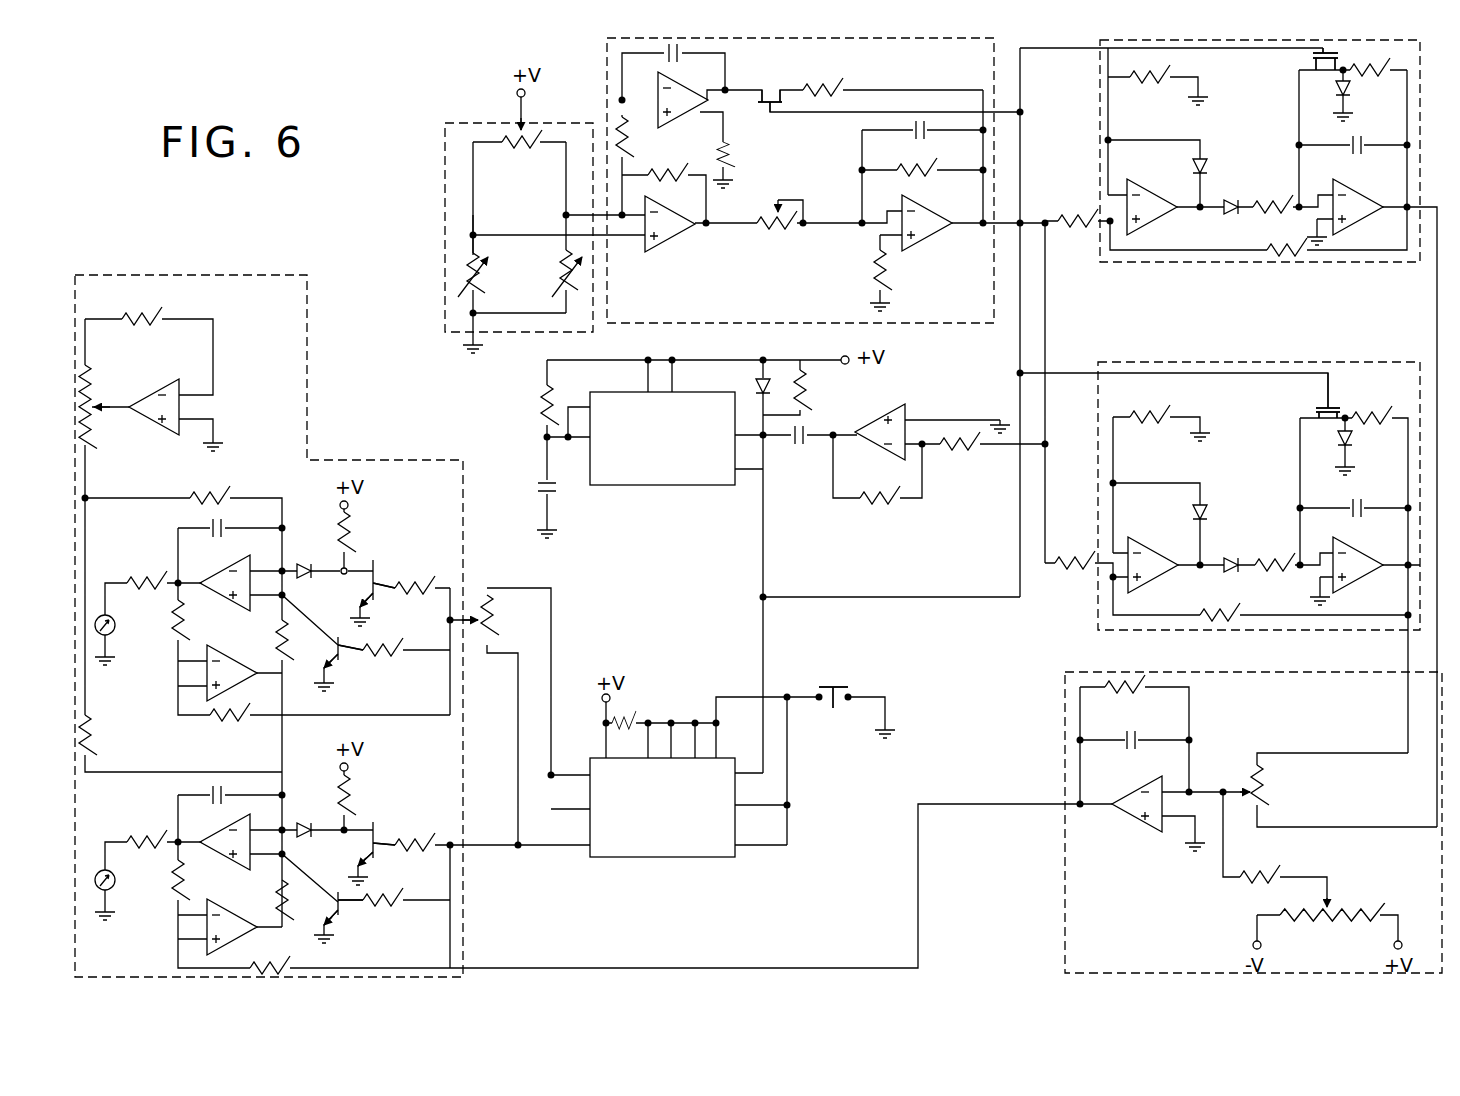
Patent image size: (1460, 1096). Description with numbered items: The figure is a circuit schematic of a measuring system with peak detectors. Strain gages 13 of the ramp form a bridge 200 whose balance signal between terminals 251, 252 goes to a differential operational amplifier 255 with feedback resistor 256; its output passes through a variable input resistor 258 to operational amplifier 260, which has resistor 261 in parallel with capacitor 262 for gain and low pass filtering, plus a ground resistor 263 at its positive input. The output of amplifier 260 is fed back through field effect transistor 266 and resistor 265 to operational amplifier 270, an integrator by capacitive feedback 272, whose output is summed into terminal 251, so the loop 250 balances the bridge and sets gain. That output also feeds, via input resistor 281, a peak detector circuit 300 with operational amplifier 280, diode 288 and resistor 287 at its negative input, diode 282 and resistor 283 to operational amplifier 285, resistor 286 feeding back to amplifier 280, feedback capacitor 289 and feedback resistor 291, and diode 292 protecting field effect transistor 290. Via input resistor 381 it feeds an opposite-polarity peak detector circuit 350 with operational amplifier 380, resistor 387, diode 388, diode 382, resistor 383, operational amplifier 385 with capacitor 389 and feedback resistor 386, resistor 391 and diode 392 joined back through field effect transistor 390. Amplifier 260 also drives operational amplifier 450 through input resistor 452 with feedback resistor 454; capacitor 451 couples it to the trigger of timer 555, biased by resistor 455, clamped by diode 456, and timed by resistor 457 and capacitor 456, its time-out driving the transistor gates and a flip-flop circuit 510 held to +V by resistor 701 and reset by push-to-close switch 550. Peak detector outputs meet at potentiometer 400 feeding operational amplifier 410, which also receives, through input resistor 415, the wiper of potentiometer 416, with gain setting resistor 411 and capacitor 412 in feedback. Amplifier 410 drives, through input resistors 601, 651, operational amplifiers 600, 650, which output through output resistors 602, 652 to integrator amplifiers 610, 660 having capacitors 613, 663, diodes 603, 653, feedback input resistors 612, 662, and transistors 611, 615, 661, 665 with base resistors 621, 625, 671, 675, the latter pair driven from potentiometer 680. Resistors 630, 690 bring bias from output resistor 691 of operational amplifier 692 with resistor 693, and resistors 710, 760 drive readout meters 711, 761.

The strain gages 13 is at (520, 281).
The bridge 200 is at (438, 243).
The loop 250 is at (1001, 45).
The terminal 251 is at (564, 215).
The terminal 252 is at (476, 237).
The operational amplifier 255 is at (662, 250).
The feedback resistor 256 is at (668, 172).
The variable input resistor 258 is at (778, 206).
The operational amplifier 260 is at (920, 242).
The resistor 261 is at (917, 176).
The capacitor 262 is at (925, 136).
The resistor 263 is at (872, 270).
The resistor 265 is at (840, 90).
The field effect transistor 266 is at (764, 100).
The operational amplifier 270 is at (662, 114).
The capacitive feedback 272 is at (657, 62).
The input resistor 281 is at (1075, 218).
The operational amplifier 280 is at (1150, 188).
The diode 282 is at (1225, 222).
The resistor 283 is at (1272, 203).
The operational amplifier 285 is at (1360, 192).
The resistor 286 is at (1283, 256).
The resistor 287 is at (1148, 80).
The diode 288 is at (1208, 165).
The feedback capacitor 289 is at (1350, 148).
The field effect transistor 290 is at (1320, 54).
The feedback resistor 291 is at (1370, 68).
The diode 292 is at (1335, 88).
The peak detector circuit 300 is at (1096, 82).
The peak detector circuit 350 is at (1367, 360).
The operational amplifier 380 is at (1152, 548).
The input resistor 381 is at (1070, 570).
The diode 382 is at (1232, 557).
The resistor 383 is at (1272, 570).
The operational amplifier 385 is at (1360, 578).
The feedback resistor 386 is at (1220, 613).
The resistor 387 is at (1150, 420).
The diode 388 is at (1208, 512).
The capacitor 389 is at (1362, 504).
The field effect transistor 390 is at (1325, 404).
The resistor 391 is at (1372, 415).
The diode 392 is at (1338, 438).
The potentiometer 400 is at (1262, 792).
The operational amplifier 410 is at (1135, 820).
The gain setting resistor 411 is at (1122, 682).
The capacitor 412 is at (1138, 736).
The input resistor 415 is at (1268, 874).
The potentiometer 416 is at (1360, 910).
The operational amplifier 450 is at (870, 416).
The capacitor 451 is at (795, 442).
The input resistor 452 is at (955, 448).
The resistor 454 is at (872, 502).
The resistor 455 is at (805, 388).
The diode and capacitor 456 is at (542, 484).
The resistor 457 is at (543, 402).
The flip-flop circuit 510 is at (674, 858).
The push-to-close switch 550 is at (840, 686).
The timer 555 is at (645, 488).
The operational amplifier 600 is at (236, 914).
The input resistor 601 is at (292, 968).
The output resistor 602 is at (290, 918).
The diode 603 is at (308, 820).
The operational amplifier 610 is at (246, 842).
The transistor 611 is at (378, 832).
The input resistor 612 is at (184, 878).
The capacitor 613 is at (205, 793).
The transistor 615 is at (336, 890).
The base resistor 621 is at (414, 850).
The base resistor 625 is at (378, 904).
The resistor 630 is at (92, 735).
The operational amplifier 650 is at (236, 664).
The input resistor 651 is at (236, 718).
The output resistor 652 is at (290, 660).
The diode 653 is at (308, 562).
The operational amplifier 660 is at (222, 578).
The transistor 661 is at (376, 570).
The input resistor 662 is at (184, 620).
The capacitor 663 is at (205, 528).
The transistor 665 is at (344, 658).
The base resistor 671 is at (414, 586).
The base resistor 675 is at (385, 656).
The potentiometer 680 is at (490, 618).
The resistor 690 is at (222, 494).
The output resistor 691 is at (92, 430).
The operational amplifier 692 is at (162, 380).
The resistor 693 is at (150, 315).
The resistor 701 is at (628, 718).
The resistor 710 is at (147, 588).
The readout meter 711 is at (116, 640).
The resistor 760 is at (147, 840).
The readout meter 761 is at (116, 882).